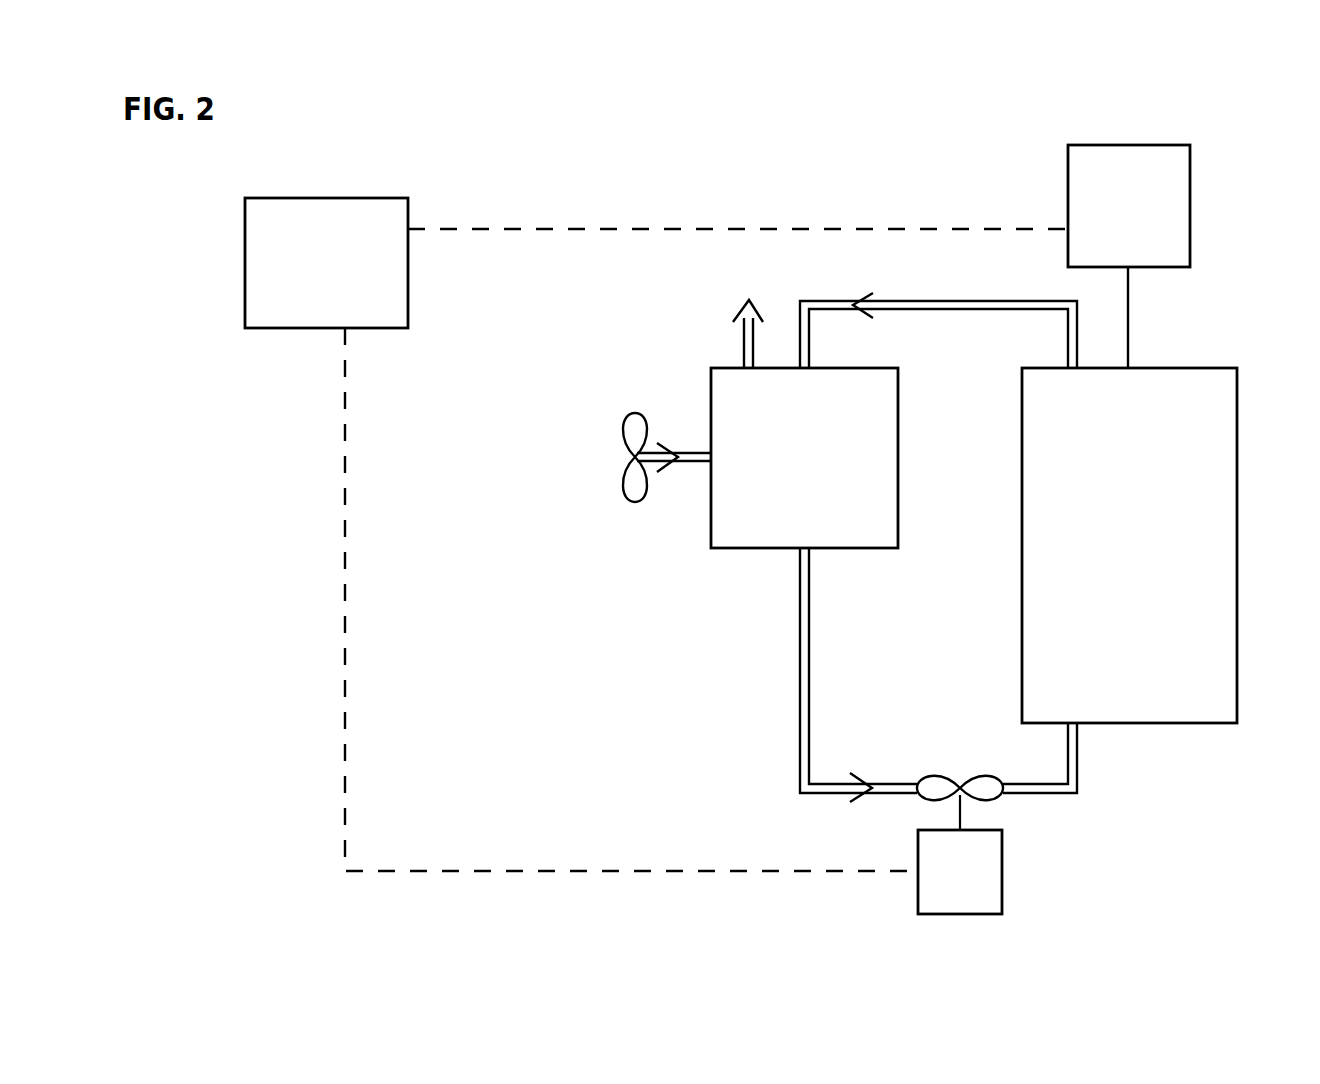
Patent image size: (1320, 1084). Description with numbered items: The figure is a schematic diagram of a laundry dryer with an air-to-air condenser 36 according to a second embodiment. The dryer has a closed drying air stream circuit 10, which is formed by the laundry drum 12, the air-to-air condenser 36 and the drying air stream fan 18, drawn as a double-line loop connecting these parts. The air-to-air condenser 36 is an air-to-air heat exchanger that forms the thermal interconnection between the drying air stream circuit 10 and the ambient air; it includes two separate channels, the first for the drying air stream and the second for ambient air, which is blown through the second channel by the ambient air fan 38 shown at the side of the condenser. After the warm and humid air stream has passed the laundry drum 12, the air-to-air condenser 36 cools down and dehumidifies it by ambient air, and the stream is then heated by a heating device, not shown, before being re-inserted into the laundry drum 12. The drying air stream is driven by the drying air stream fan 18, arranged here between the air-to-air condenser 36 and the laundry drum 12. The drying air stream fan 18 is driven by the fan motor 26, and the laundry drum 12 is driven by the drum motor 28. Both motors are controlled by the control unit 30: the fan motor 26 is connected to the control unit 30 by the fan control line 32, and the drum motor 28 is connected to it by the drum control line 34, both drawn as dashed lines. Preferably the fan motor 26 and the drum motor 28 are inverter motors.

The drying air stream circuit 10 is at (967, 303).
The laundry drum 12 is at (1125, 713).
The drying air stream fan 18 is at (987, 785).
The fan motor 26 is at (930, 891).
The drum motor 28 is at (1173, 190).
The control unit 30 is at (305, 318).
The fan control line 32 is at (570, 870).
The drum control line 34 is at (775, 228).
The air-to-air condenser 36 is at (753, 533).
The ambient air fan 38 is at (630, 430).